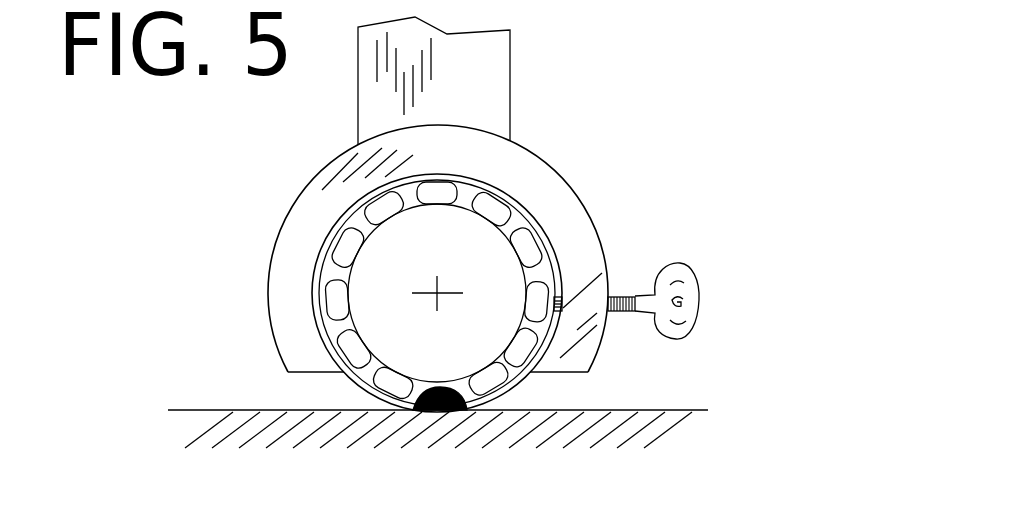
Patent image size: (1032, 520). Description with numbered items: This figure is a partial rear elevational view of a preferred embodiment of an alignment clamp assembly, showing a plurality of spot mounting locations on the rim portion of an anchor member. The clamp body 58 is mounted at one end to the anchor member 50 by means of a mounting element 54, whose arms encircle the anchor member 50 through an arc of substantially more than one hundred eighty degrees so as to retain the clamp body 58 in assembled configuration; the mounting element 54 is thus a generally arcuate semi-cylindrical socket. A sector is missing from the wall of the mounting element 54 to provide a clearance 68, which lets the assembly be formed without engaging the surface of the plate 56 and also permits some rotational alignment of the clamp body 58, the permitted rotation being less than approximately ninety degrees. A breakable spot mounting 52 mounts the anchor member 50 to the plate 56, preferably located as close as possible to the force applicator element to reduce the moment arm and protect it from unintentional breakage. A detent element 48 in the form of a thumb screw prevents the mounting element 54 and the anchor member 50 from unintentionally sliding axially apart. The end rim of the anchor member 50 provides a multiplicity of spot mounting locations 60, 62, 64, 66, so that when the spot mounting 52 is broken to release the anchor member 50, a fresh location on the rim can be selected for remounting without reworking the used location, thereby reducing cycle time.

The detent element 48 is at (697, 288).
The anchor member 50 is at (355, 221).
The breakable spot mounting 52 is at (442, 393).
The mounting element 54 is at (438, 145).
The plate 56 is at (680, 410).
The clamp body 58 is at (468, 80).
The spot mounting location 60 is at (561, 296).
The spot mounting location 62 is at (530, 245).
The spot mounting location 64 is at (488, 205).
The spot mounting location 66 is at (448, 192).
The clearance 68 is at (313, 388).